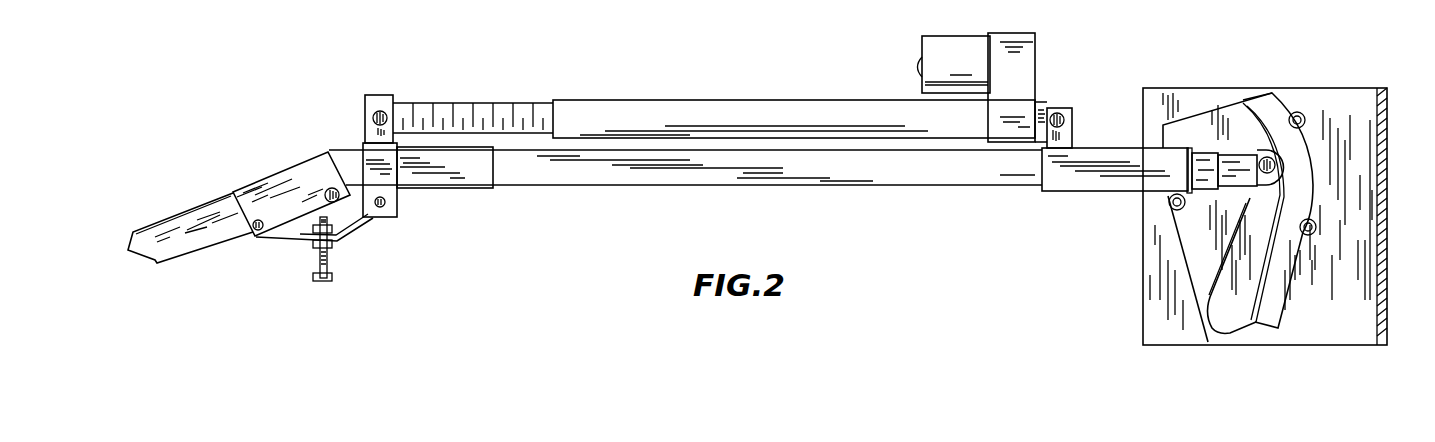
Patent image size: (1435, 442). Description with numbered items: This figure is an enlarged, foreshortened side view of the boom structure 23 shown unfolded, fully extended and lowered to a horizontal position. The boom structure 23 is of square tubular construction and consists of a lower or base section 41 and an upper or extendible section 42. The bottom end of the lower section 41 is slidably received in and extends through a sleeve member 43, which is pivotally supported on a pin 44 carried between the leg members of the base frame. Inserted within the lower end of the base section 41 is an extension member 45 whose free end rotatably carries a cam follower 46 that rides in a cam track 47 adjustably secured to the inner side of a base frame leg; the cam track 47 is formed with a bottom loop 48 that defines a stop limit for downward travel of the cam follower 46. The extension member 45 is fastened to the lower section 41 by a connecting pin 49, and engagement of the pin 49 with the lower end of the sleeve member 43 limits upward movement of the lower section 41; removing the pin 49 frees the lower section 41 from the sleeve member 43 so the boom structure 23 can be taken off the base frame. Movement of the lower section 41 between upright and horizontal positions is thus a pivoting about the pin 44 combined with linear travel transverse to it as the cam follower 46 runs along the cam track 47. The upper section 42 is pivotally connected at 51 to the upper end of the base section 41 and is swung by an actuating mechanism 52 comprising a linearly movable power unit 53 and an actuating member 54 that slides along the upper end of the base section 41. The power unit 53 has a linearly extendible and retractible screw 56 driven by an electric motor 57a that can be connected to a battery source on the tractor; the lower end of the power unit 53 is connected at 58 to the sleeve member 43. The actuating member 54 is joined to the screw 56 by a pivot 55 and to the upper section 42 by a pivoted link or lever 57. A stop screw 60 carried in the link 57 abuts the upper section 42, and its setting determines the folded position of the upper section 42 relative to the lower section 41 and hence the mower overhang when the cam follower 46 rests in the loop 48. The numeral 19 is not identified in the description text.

The cutting assembly 19 is at (837, 4).
The boom structure 23 is at (672, 195).
The lower or base section 41 is at (893, 180).
The upper or extendible section 42 is at (197, 217).
The sleeve member 43 is at (1095, 180).
The pin 44 is at (1175, 208).
The extension member 45 is at (1232, 157).
The cam follower 46 is at (1273, 157).
The cam track 47 is at (1263, 283).
The bottom loop 48 is at (1210, 343).
The connecting pin 49 is at (1193, 150).
The pivotal connection 51 is at (323, 177).
The actuating mechanism 52 is at (575, 83).
The linearly movable power unit 53 is at (722, 108).
The actuating member 54 is at (437, 190).
The pivot 55 is at (380, 110).
The screw 56 is at (455, 108).
The pivoted link or lever 57 is at (350, 233).
The electric motor 57a is at (960, 47).
The connection 58 is at (1055, 110).
The stop screw 60 is at (328, 283).